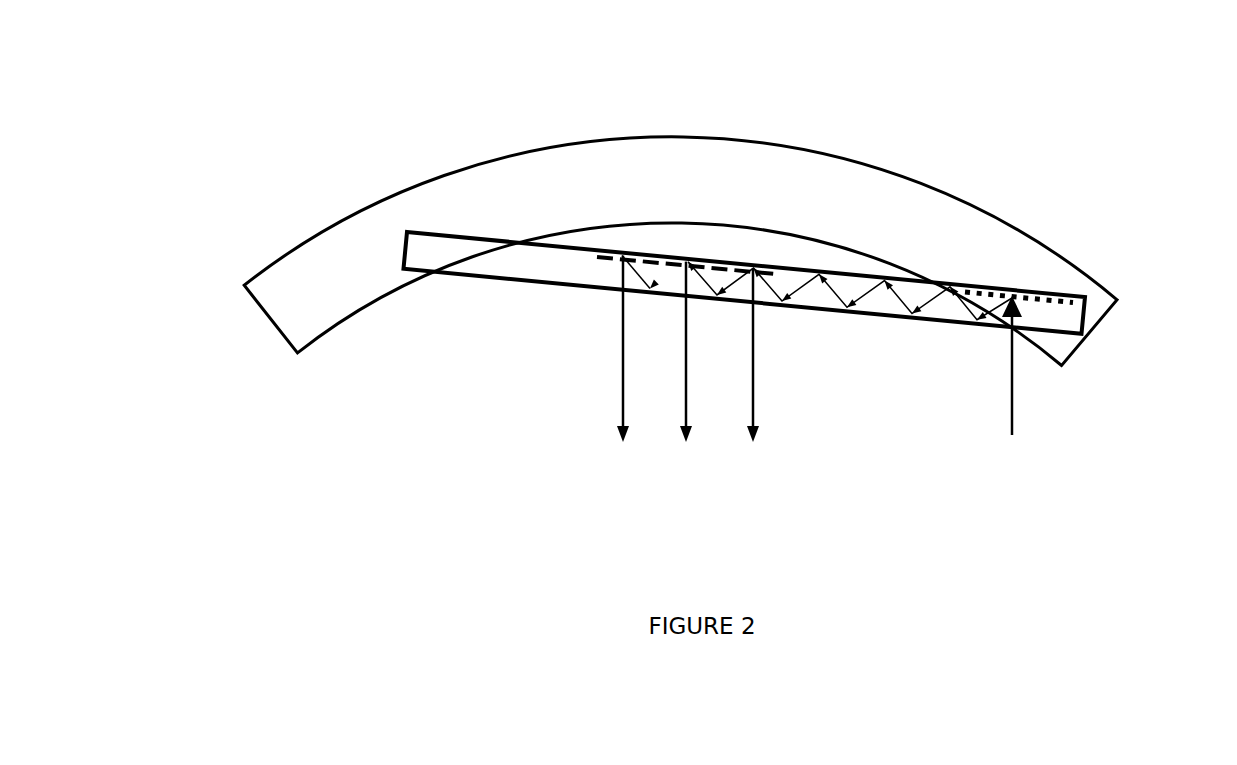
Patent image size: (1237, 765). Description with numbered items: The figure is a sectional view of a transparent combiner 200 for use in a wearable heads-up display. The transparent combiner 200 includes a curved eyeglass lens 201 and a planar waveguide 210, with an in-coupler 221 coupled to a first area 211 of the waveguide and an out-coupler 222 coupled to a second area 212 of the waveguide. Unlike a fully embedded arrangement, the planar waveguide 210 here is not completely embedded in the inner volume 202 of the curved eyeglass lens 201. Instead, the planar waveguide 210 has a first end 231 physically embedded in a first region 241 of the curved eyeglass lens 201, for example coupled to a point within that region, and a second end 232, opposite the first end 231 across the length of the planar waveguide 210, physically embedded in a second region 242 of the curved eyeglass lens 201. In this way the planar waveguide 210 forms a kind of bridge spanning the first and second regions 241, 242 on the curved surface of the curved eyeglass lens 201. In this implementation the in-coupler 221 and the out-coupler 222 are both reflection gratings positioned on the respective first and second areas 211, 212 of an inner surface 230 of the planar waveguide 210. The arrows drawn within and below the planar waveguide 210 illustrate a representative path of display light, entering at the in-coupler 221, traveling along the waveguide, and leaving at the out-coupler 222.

The transparent combiner 200 is at (266, 105).
The curved eyeglass lens 201 is at (270, 322).
The inner volume 202 is at (855, 212).
The planar waveguide 210 is at (803, 309).
The first area 211 is at (1050, 307).
The second area 212 is at (670, 257).
The in-coupler 221 is at (1070, 295).
The out-coupler 222 is at (645, 255).
The inner surface 230 is at (572, 250).
The first end 231 is at (1093, 322).
The second end 232 is at (405, 252).
The first region 241 is at (1047, 288).
The second region 242 is at (432, 247).